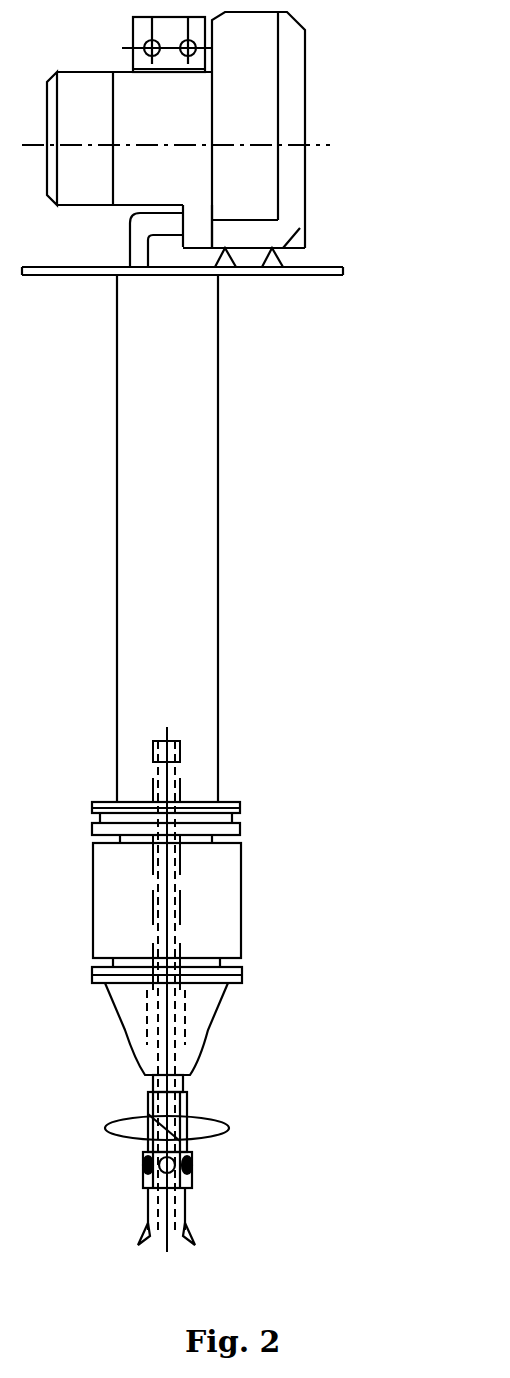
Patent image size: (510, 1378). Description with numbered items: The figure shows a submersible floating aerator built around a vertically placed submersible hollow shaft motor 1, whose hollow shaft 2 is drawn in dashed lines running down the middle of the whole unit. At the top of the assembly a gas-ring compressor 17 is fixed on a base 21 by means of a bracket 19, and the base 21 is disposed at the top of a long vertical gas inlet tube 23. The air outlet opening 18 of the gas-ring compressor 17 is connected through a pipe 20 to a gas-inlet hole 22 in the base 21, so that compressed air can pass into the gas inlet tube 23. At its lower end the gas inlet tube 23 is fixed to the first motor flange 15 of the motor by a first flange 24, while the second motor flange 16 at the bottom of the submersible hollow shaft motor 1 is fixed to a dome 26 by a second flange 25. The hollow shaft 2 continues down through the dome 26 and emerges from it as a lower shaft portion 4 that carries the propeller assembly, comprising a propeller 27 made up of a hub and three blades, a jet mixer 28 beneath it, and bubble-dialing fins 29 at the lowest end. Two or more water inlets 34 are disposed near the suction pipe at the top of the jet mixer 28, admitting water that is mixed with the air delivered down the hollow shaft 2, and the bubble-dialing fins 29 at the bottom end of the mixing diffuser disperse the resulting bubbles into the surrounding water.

The submersible hollow shaft motor 1 is at (241, 908).
The shaft 2 is at (168, 740).
The shaft sleeve 4 is at (185, 1084).
The first motor flange 15 is at (241, 815).
The second motor flange 16 is at (243, 966).
The gas-ring compressor 17 is at (297, 55).
The air outlet opening 18 is at (203, 222).
The bracket 19 is at (305, 250).
The pipe 20 is at (130, 223).
The base 21 is at (343, 271).
The gas-inlet hole 22 is at (135, 275).
The gas inlet tube 23 is at (243, 513).
The first flange 24 is at (241, 803).
The second flange 25 is at (243, 986).
The dome 26 is at (205, 1048).
The propeller 27 is at (243, 1127).
The jet mixer 28 is at (205, 1175).
The bubble-dialing fin 29 is at (203, 1233).
The water inlets 34 is at (150, 1163).